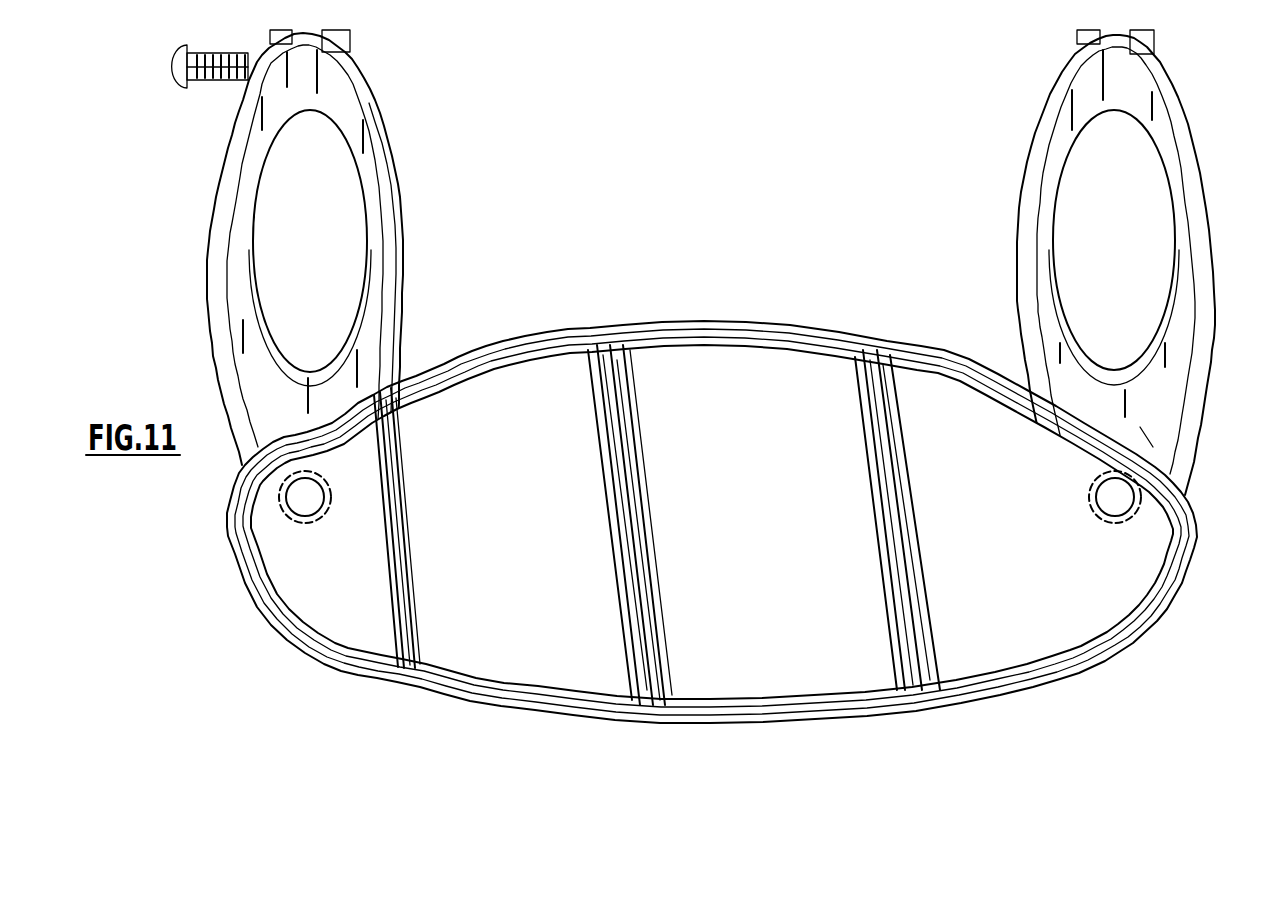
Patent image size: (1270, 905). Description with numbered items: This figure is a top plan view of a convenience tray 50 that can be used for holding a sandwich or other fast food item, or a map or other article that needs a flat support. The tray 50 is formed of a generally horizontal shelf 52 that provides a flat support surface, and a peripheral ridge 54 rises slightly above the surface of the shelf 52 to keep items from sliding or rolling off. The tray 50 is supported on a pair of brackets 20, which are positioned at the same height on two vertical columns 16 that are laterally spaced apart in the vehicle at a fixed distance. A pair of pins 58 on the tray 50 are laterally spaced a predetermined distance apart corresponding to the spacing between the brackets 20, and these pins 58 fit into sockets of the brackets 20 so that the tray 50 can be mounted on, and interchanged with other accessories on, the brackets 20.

The vertical column 16 is at (372, 190).
The bracket 20 is at (395, 353).
The convenience tray 50 is at (717, 405).
The shelf 52 is at (745, 544).
The peripheral ridge 54 is at (773, 722).
The pin 58 is at (305, 524).